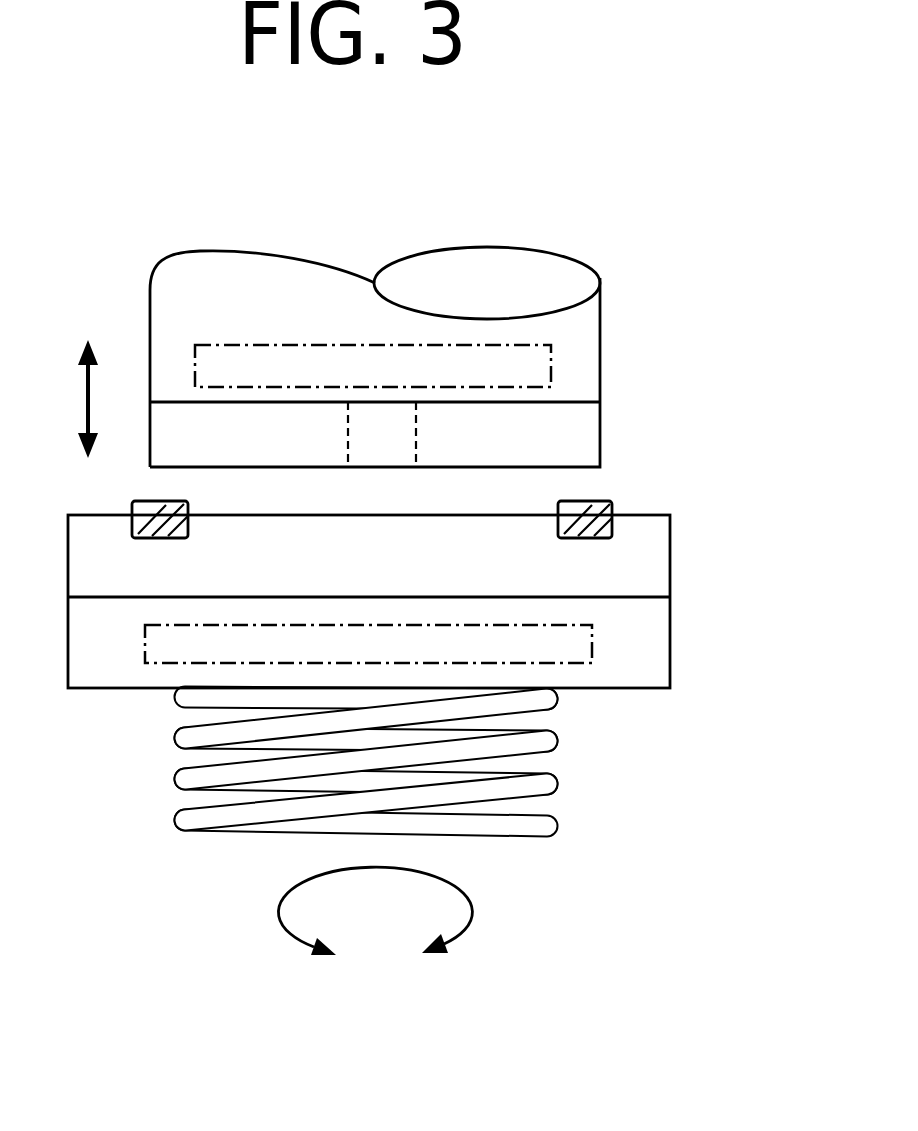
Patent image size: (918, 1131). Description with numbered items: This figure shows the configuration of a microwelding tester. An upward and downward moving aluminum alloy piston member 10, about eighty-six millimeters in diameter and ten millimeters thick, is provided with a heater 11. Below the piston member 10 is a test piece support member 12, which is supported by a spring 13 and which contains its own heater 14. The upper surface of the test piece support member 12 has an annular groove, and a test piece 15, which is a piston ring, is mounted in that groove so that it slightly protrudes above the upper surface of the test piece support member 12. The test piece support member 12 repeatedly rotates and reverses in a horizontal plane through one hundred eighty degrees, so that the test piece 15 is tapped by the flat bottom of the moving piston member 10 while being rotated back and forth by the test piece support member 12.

The piston member 10 is at (630, 414).
The heater 11 is at (552, 346).
The test piece support member 12 is at (690, 562).
The spring 13 is at (549, 745).
The heater 14 is at (593, 628).
The test piece 15 is at (598, 503).